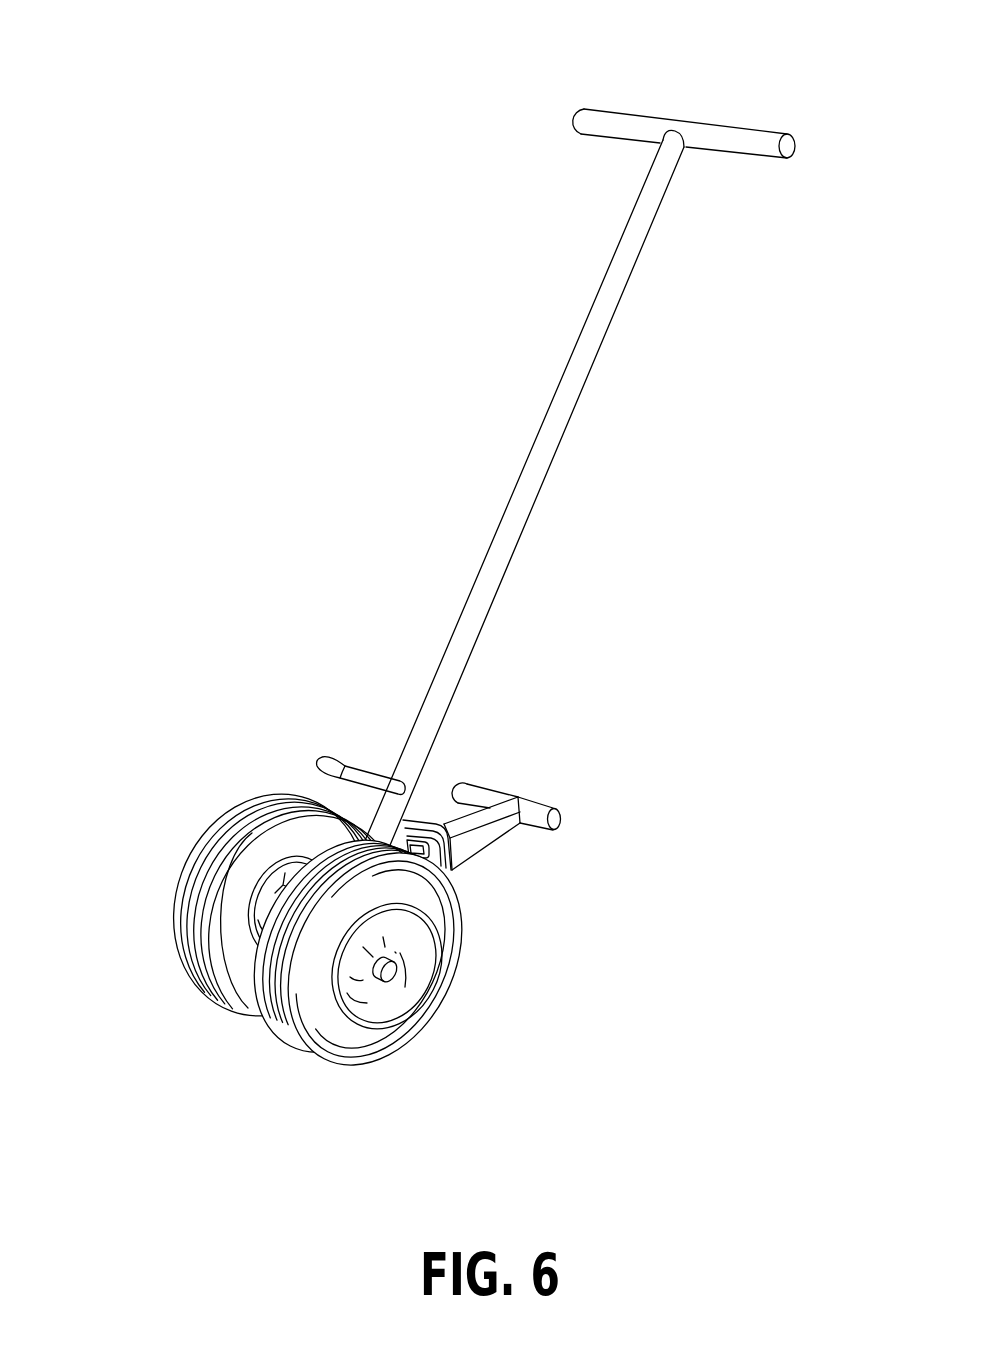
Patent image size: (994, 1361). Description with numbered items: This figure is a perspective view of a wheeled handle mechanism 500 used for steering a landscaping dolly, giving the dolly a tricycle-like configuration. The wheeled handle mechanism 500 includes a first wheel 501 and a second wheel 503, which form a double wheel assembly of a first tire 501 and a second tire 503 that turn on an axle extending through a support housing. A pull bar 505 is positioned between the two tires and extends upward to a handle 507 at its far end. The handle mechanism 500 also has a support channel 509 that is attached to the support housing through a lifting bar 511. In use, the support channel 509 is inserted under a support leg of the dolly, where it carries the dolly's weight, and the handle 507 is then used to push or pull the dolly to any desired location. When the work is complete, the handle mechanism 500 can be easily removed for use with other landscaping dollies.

The wheeled handle mechanism 500 is at (275, 42).
The first wheel 501 is at (207, 857).
The second wheel 503 is at (298, 1062).
The pull bar 505 is at (520, 508).
The handle 507 is at (687, 131).
The support channel 509 is at (560, 826).
The lifting bar 511 is at (472, 842).